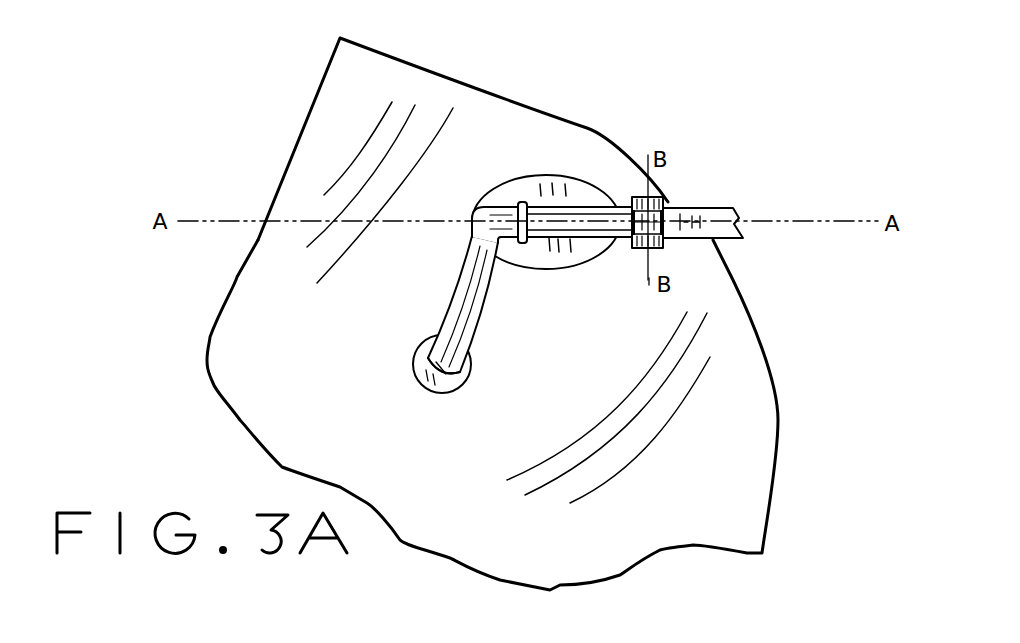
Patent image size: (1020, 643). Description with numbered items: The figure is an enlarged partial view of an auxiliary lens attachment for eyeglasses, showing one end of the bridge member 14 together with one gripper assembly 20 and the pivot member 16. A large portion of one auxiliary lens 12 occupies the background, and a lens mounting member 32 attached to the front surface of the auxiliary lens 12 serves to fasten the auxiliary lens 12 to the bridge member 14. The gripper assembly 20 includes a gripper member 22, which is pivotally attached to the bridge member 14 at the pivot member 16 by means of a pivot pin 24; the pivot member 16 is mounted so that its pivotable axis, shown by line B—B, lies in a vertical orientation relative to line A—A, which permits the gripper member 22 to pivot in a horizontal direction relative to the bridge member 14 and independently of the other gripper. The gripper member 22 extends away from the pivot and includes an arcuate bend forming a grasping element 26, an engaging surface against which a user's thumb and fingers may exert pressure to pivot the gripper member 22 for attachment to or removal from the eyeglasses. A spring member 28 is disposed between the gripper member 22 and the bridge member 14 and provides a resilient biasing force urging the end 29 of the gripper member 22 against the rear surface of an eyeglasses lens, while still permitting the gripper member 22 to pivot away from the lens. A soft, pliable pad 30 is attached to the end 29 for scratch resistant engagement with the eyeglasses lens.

The auxiliary lens 12 is at (732, 360).
The bridge member 14 is at (723, 233).
The pivot member 16 is at (667, 200).
The gripper assembly 20 is at (609, 176).
The gripper member 22 is at (470, 213).
The pivot pin 24 is at (680, 207).
The grasping element 26 is at (448, 325).
The spring member 28 is at (525, 203).
The end of the gripper member 29 is at (460, 388).
The pad 30 is at (430, 390).
The lens mounting member 32 is at (503, 195).